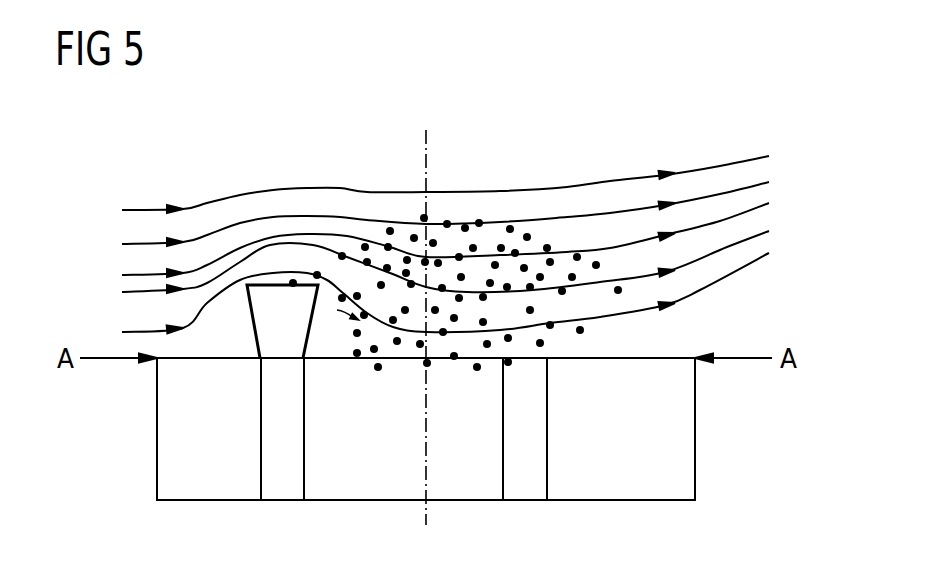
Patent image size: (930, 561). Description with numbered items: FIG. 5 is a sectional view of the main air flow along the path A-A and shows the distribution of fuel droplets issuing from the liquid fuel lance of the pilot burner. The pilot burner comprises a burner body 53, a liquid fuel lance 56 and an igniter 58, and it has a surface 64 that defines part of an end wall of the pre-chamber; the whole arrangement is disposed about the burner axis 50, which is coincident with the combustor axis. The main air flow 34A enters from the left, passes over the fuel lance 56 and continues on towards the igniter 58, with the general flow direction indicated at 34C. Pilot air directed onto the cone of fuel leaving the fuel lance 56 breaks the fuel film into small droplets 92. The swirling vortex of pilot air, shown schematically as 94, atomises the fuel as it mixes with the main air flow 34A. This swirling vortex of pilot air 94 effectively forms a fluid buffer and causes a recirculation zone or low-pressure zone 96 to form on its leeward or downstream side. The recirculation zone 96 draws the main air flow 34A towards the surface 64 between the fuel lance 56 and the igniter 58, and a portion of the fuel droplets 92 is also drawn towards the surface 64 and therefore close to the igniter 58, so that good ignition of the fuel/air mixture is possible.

The main air flow 34A is at (142, 275).
The flow direction 34C is at (228, 176).
The burner axis 50 is at (422, 163).
The burner body 53 is at (167, 449).
The liquid fuel lance 56 is at (270, 442).
The igniter 58 is at (535, 433).
The surface 64 is at (675, 357).
The fuel droplets 92 is at (596, 262).
The swirling vortex of pilot air 94 is at (262, 317).
The recirculation zone or low-pressure zone 96 is at (323, 323).